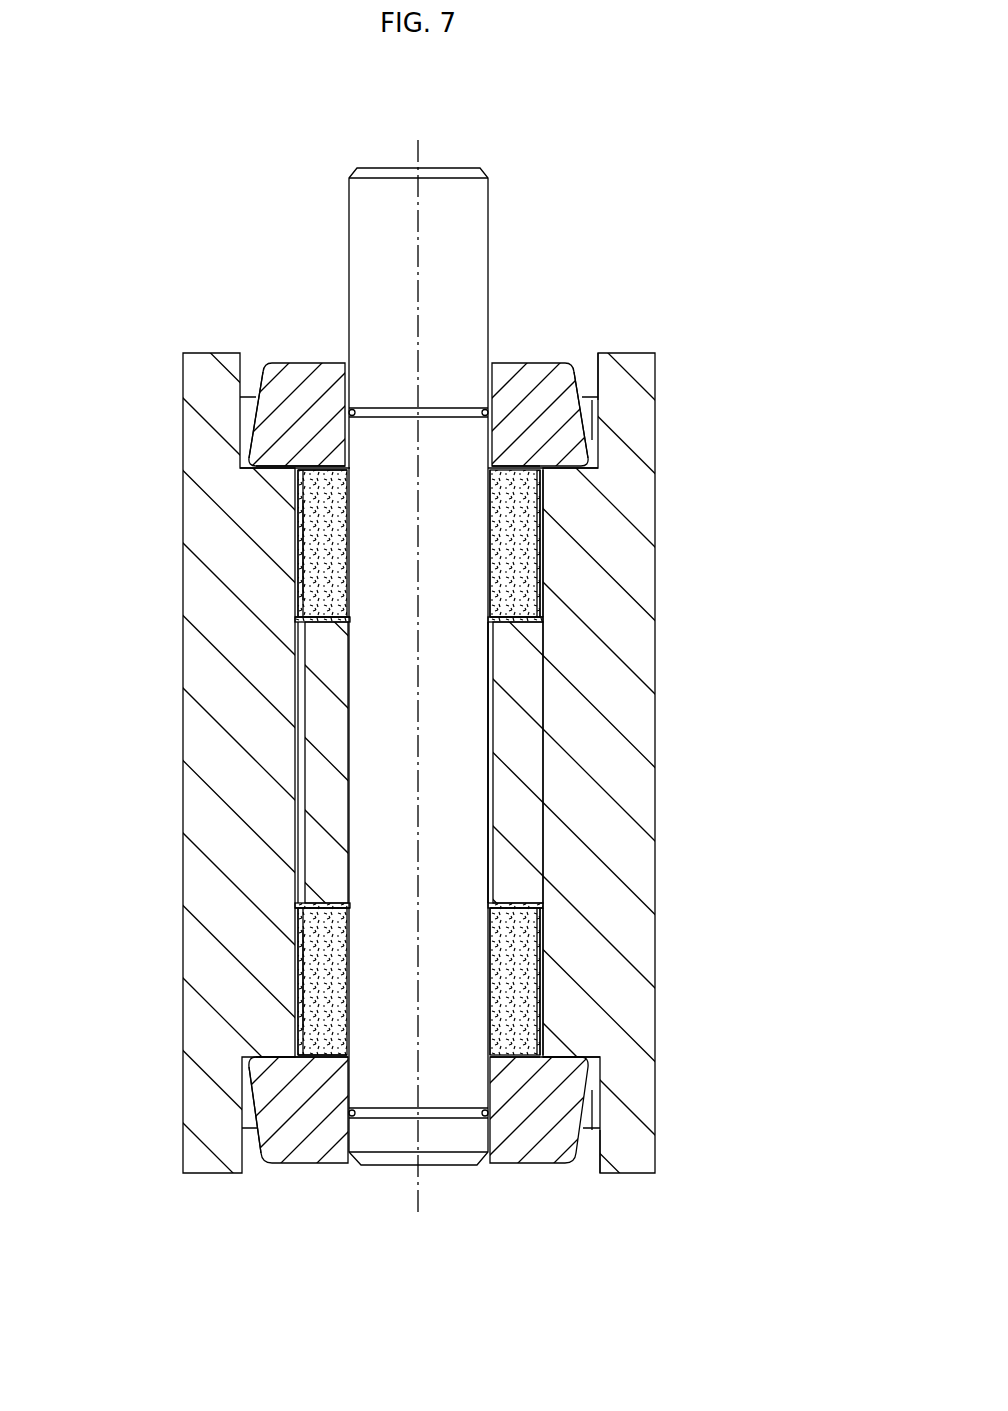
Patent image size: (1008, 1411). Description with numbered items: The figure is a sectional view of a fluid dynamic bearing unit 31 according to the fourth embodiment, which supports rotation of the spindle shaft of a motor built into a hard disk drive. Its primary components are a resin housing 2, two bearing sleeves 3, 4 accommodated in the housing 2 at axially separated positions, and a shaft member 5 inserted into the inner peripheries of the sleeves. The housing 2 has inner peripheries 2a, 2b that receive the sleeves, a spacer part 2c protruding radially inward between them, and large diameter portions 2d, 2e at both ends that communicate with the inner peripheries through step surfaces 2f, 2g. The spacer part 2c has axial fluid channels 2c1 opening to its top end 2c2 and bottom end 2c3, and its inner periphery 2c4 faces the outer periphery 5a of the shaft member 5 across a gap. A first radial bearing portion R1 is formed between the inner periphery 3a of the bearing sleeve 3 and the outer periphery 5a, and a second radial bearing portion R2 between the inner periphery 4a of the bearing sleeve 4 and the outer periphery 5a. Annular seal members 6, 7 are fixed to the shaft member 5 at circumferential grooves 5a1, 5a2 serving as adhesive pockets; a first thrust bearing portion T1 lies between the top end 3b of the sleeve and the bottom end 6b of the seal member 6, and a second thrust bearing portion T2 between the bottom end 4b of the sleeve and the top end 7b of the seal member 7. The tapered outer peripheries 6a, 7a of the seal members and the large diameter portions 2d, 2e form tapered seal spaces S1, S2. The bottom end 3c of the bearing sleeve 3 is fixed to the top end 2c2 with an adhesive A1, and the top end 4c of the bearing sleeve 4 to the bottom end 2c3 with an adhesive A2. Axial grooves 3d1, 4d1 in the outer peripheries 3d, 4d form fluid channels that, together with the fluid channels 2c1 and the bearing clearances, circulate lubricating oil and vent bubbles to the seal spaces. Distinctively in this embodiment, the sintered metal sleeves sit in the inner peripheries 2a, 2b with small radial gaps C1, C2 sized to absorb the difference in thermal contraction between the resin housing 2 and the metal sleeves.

The housing 2 is at (613, 768).
The inner periphery of housing 2a is at (543, 505).
The inner periphery of housing 2b is at (545, 1007).
The spacer part 2c is at (322, 720).
The fluid channel 2c1 is at (300, 785).
The top end of spacer part 2c2 is at (323, 615).
The bottom end of spacer part 2c3 is at (297, 912).
The inner periphery of spacer part 2c4 is at (490, 780).
The large diameter portion 2d is at (595, 362).
The large diameter portion 2e is at (600, 1158).
The step surface 2f is at (585, 445).
The step surface 2g is at (573, 1062).
The bearing sleeve 3 is at (523, 537).
The inner periphery of bearing sleeve 3a is at (489, 625).
The top end of bearing sleeve 3b is at (253, 443).
The bottom end of bearing sleeve 3c is at (293, 645).
The outer periphery of bearing sleeve 3d is at (293, 520).
The axial groove 3d1 is at (293, 560).
The bearing sleeve 4 is at (520, 987).
The inner periphery of bearing sleeve 4a is at (492, 900).
The bottom end of bearing sleeve 4b is at (252, 1070).
The top end of bearing sleeve 4c is at (300, 895).
The outer periphery of bearing sleeve 4d is at (297, 993).
The axial groove 4d1 is at (297, 957).
The shaft member 5 is at (463, 218).
The outer periphery of shaft member 5a is at (490, 717).
The circumferential groove 5a1 is at (448, 410).
The circumferential groove 5a2 is at (452, 1112).
The seal member 6 is at (291, 375).
The outer periphery of seal member 6a is at (253, 418).
The bottom end of seal member 6b is at (293, 495).
The seal member 7 is at (308, 1127).
The outer periphery of seal member 7a is at (250, 1105).
The top end of seal member 7b is at (330, 1056).
The fluid dynamic bearing unit 31 is at (620, 245).
The seal space S1 is at (592, 415).
The seal space S2 is at (595, 1110).
The first thrust bearing portion T1 is at (518, 465).
The second thrust bearing portion T2 is at (513, 1062).
The radial gap C1 is at (545, 550).
The radial gap C2 is at (545, 1018).
The first radial bearing portion R1 is at (490, 565).
The second radial bearing portion R2 is at (492, 958).
The adhesive A1 is at (527, 613).
The adhesive A2 is at (537, 915).